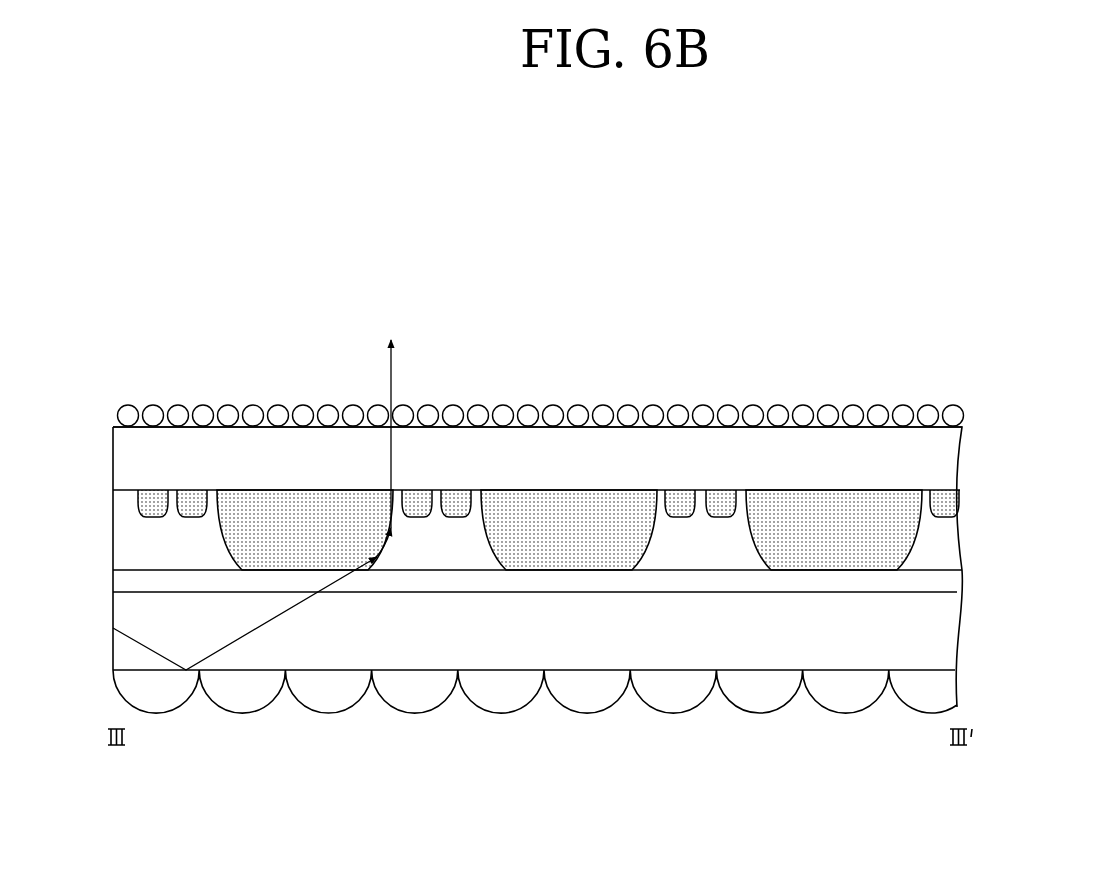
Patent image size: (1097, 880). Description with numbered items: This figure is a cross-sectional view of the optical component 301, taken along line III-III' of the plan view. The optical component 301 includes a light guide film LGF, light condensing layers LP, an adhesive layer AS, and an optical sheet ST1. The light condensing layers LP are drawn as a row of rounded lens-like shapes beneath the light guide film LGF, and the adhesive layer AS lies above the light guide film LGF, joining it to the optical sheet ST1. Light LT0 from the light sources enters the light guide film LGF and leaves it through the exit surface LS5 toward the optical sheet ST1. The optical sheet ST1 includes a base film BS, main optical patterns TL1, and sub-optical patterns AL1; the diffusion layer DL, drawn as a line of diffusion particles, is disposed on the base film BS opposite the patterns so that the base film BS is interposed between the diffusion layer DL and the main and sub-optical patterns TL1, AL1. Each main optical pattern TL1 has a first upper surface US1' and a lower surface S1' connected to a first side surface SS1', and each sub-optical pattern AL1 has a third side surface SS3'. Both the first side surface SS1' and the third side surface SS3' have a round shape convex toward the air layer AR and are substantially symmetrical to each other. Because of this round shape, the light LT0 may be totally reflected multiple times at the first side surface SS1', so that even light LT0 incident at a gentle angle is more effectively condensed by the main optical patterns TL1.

The optical component 301 is at (929, 323).
The diffusion layer DL is at (955, 413).
The base film BS is at (947, 458).
The optical sheet ST1 is at (1037, 403).
The main optical patterns TL1 is at (313, 502).
The first upper surface US1' is at (580, 451).
The lower surface S1' is at (220, 458).
The first side surface SS1' is at (680, 428).
The third side surface SS3' is at (759, 415).
The sub-optical patterns AL1 is at (722, 508).
The adhesive layer AS is at (952, 582).
The exit surface LS5 is at (527, 580).
The light guide film LGF is at (945, 630).
The light condensing layers LP is at (943, 687).
The light LT0 is at (237, 640).
The air layer AR is at (687, 548).